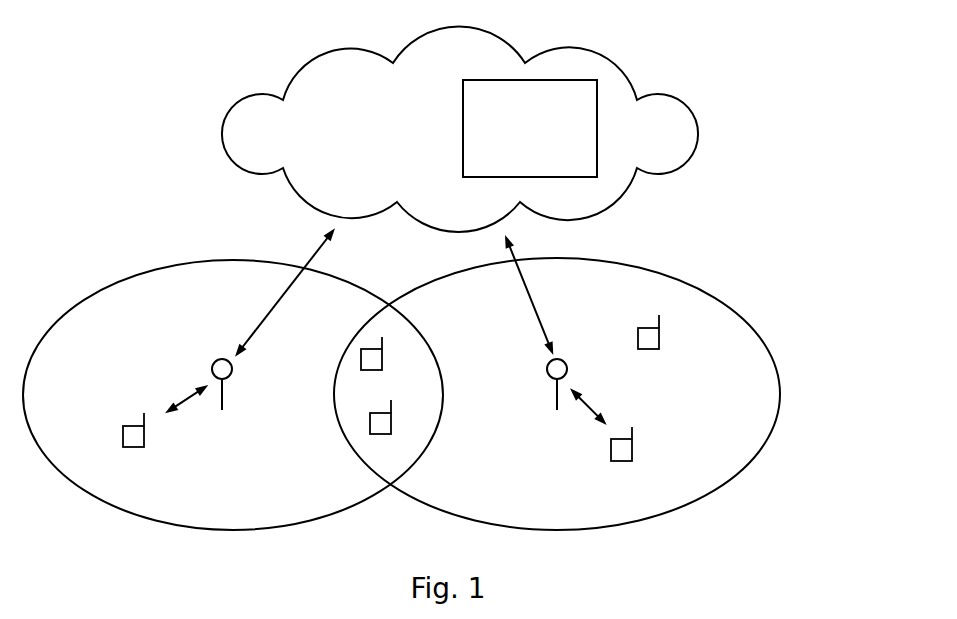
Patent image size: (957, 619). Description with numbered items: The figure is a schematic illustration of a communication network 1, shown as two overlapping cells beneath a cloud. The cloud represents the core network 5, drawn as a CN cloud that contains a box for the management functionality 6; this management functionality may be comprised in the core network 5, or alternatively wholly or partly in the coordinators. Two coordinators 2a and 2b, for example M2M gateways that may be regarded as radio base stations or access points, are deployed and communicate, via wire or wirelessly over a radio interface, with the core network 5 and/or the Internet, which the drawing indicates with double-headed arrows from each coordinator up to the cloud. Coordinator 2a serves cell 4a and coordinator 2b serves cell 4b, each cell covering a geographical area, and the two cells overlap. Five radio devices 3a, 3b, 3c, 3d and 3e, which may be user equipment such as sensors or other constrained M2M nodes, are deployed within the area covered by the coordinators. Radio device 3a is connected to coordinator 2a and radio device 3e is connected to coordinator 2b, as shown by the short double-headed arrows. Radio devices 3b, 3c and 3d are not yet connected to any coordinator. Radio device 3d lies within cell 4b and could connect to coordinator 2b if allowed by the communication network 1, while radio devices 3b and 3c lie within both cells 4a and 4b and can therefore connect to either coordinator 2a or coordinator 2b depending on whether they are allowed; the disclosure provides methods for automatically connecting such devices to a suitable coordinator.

The communication network 1 is at (780, 168).
The coordinator 2a is at (214, 364).
The coordinator 2b is at (565, 363).
The radio device 3a is at (137, 447).
The radio device 3b is at (373, 367).
The radio device 3c is at (382, 431).
The radio device 3d is at (650, 345).
The radio device 3e is at (625, 457).
The cell 4a is at (108, 310).
The cell 4b is at (763, 377).
The core network 5 is at (384, 125).
The management functionality 6 is at (522, 112).